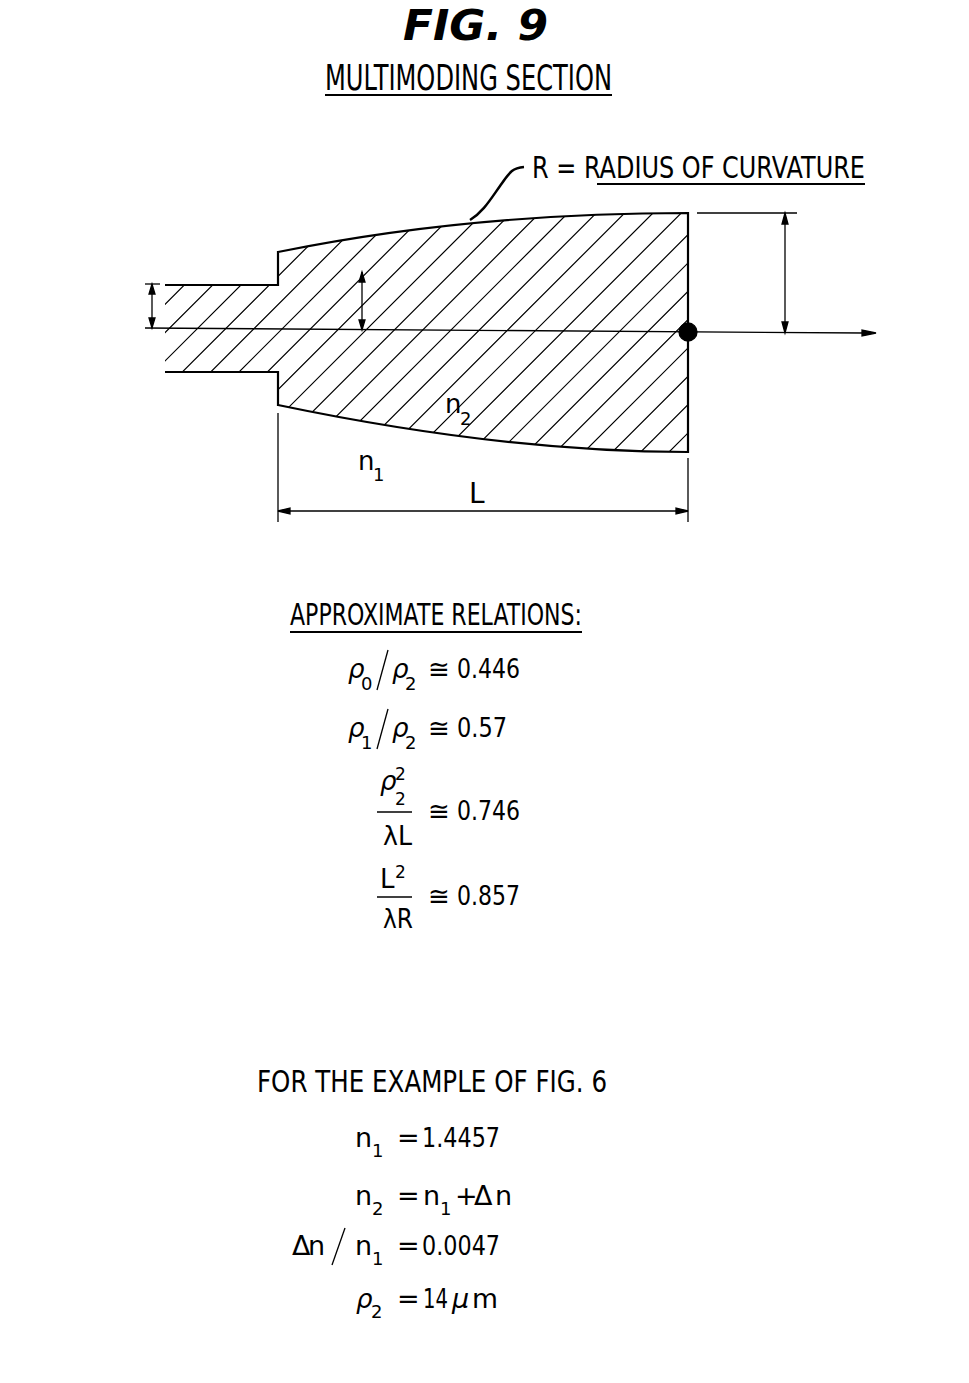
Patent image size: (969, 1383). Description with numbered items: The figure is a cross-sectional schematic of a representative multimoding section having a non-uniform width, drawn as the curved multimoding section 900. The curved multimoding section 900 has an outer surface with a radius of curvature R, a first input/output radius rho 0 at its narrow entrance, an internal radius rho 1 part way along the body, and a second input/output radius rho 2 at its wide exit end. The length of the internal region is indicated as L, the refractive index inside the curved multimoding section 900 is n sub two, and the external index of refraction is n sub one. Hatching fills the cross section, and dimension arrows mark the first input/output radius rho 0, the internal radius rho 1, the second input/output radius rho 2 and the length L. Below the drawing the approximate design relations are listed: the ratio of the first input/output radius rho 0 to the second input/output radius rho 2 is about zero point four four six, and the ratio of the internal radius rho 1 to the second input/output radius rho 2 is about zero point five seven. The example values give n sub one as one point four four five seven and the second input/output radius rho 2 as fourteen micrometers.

The curved multimoding section 900 is at (678, 424).
The input core radius rho- 0 is at (140, 306).
The multimoding section input radius rho- 1 is at (381, 301).
The multimoding section output radius rho- 2 is at (760, 273).